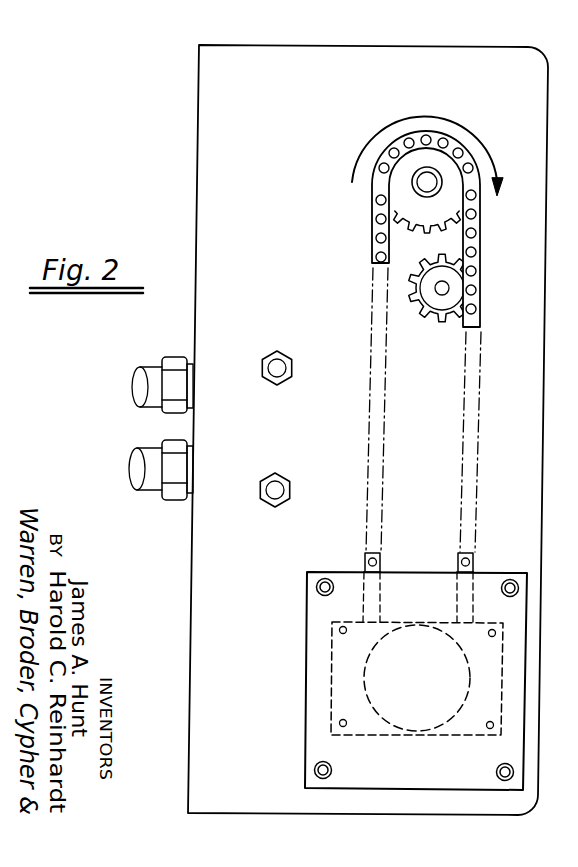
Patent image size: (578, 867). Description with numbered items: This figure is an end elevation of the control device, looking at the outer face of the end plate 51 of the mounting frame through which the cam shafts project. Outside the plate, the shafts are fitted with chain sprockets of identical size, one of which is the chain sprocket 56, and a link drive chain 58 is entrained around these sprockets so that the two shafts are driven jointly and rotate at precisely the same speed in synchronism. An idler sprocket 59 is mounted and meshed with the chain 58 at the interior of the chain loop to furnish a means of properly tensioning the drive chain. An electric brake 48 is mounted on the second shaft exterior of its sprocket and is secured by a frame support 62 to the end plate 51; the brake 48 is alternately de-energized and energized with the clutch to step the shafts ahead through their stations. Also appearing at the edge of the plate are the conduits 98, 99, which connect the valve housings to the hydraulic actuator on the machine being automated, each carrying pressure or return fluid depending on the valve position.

The end plate 51 is at (278, 193).
The chain sprocket 56 is at (398, 183).
The link drive chain 58 is at (478, 241).
The idler sprocket 59 is at (445, 319).
The frame support 62 is at (482, 588).
The electric brake 48 is at (468, 692).
The conduit 98 is at (155, 375).
The conduit 99 is at (155, 460).